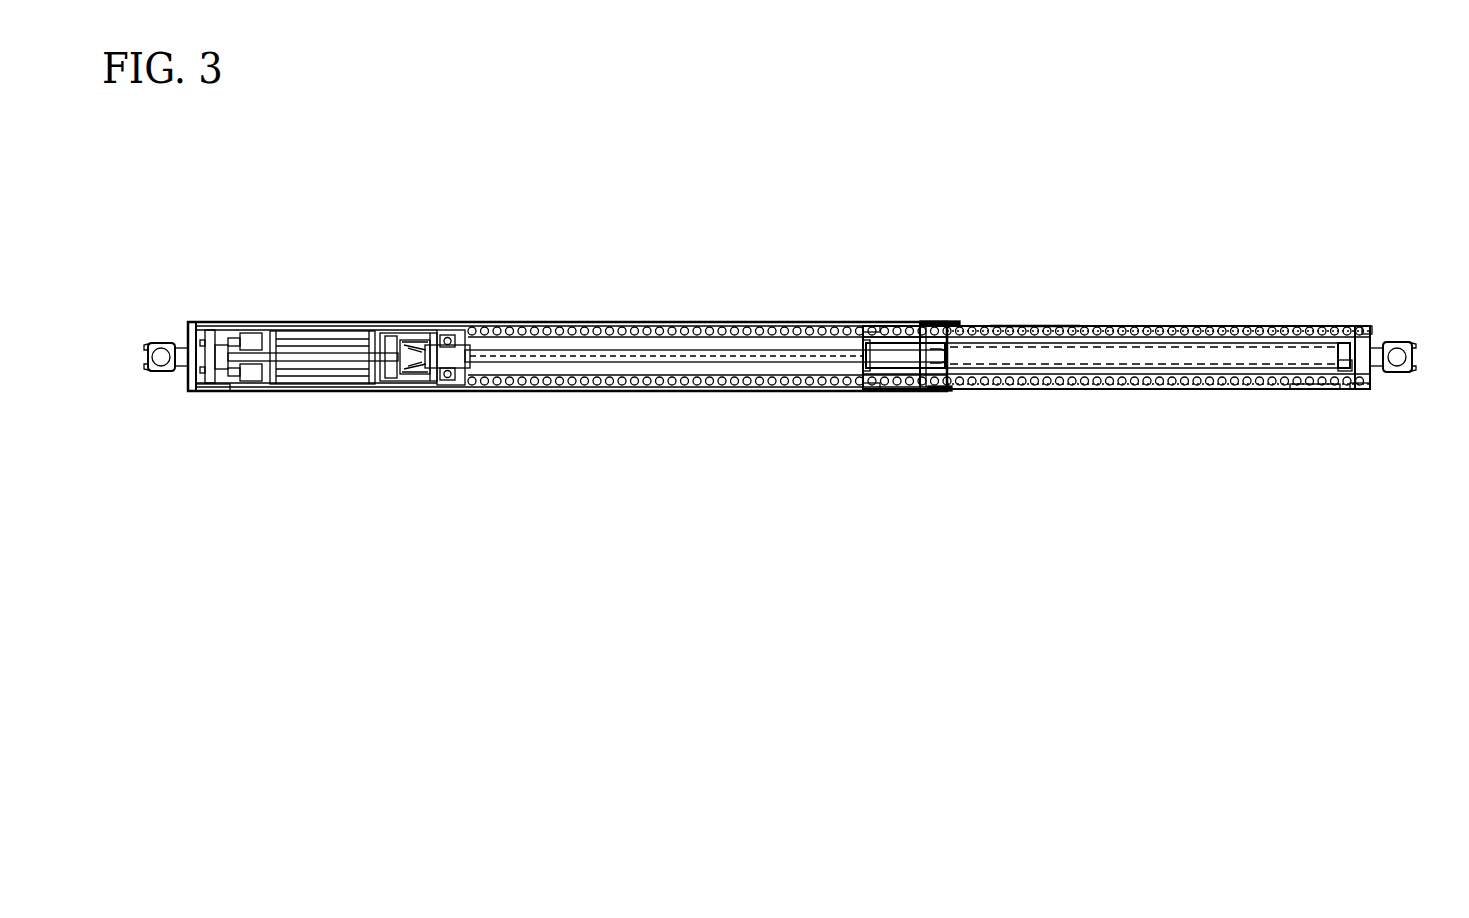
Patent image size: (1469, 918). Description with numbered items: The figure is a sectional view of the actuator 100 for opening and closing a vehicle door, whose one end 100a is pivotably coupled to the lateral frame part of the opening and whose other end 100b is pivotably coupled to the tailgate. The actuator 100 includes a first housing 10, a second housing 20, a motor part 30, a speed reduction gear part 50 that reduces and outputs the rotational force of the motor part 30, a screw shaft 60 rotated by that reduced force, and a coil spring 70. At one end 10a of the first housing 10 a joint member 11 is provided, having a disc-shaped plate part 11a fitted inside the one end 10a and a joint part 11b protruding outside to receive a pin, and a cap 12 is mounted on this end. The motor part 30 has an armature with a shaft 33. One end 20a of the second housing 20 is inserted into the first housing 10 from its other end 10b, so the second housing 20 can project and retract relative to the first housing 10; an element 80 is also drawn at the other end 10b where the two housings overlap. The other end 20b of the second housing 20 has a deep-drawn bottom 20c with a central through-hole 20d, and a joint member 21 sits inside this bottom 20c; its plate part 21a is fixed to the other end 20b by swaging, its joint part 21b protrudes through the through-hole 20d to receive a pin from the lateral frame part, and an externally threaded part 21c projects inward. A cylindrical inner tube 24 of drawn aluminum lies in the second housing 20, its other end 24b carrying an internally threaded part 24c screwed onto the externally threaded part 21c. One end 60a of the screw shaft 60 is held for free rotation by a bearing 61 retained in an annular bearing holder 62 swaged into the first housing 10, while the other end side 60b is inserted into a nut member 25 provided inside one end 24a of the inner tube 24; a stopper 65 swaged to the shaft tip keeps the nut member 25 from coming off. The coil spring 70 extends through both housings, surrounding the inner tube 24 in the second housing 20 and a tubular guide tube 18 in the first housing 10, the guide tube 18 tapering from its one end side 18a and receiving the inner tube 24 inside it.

The actuator 100 is at (783, 311).
The first housing 10 is at (594, 351).
The one end of the first housing 10a is at (213, 390).
The other end of the first housing 10b is at (948, 392).
The joint member 11 is at (155, 368).
The plate part 11a is at (191, 391).
The joint part 11b is at (147, 347).
The cap 12 is at (205, 330).
The guide tube 18 is at (667, 332).
The one end side of the guide tube 18a is at (480, 390).
The second housing 20 is at (1113, 354).
The one end of the second housing 20a is at (877, 392).
The other end of the second housing 20b is at (1357, 390).
The bottom 20c is at (1380, 346).
The through-hole 20d is at (1380, 368).
The joint member 21 is at (1387, 349).
The plate part 21a is at (1366, 328).
The joint part 21b is at (1414, 349).
The externally threaded part 21c is at (1307, 383).
The inner tube 24 is at (1093, 358).
The one end of the inner tube 24a is at (880, 343).
The other end of the inner tube 24b is at (1347, 360).
The internally threaded part 24c is at (1347, 350).
The nut member 25 is at (900, 348).
The motor part 30 is at (313, 336).
The shaft 33 is at (338, 360).
The speed reduction gear part 50 is at (408, 312).
The screw shaft 60 is at (713, 311).
The one end of the screw shaft 60a is at (463, 357).
The other end side of the screw shaft 60b is at (940, 352).
The bearing 61 is at (447, 388).
The bearing holder 62 is at (448, 332).
The stopper 65 is at (940, 390).
The coil spring 70 is at (1032, 325).
The cap 80 is at (955, 322).
The one end of the actuator 100a is at (1408, 371).
The other end of the actuator 100b is at (147, 368).